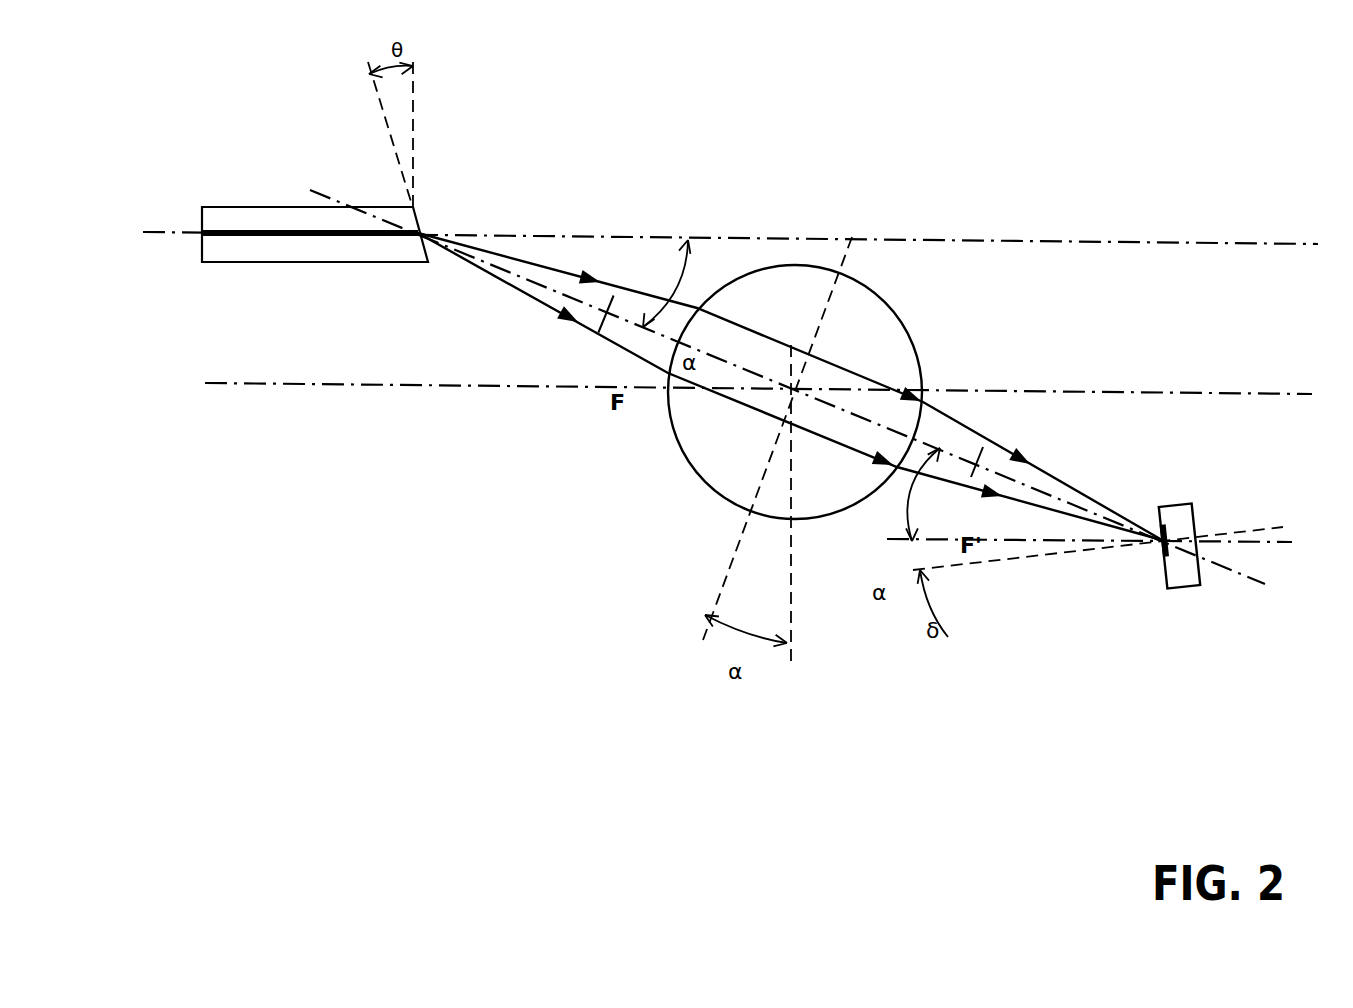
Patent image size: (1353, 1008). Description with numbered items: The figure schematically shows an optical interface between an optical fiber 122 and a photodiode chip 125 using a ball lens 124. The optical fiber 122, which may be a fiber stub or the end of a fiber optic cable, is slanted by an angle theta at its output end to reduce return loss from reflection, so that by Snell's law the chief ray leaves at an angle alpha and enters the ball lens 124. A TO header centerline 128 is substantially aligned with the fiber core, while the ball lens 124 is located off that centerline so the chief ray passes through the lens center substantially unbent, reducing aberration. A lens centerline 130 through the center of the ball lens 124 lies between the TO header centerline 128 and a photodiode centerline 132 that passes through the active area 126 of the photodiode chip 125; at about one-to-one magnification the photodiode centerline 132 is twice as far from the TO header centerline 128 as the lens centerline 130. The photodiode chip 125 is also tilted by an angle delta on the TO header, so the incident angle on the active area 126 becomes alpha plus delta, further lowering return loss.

The optical fiber 122 is at (240, 205).
The ball lens 124 is at (903, 322).
The photodiode chip 125 is at (1187, 587).
The active area 126 is at (1157, 548).
The TO header centerline 128 is at (1258, 240).
The lens centerline 130 is at (1253, 392).
The photodiode centerline 132 is at (1250, 540).